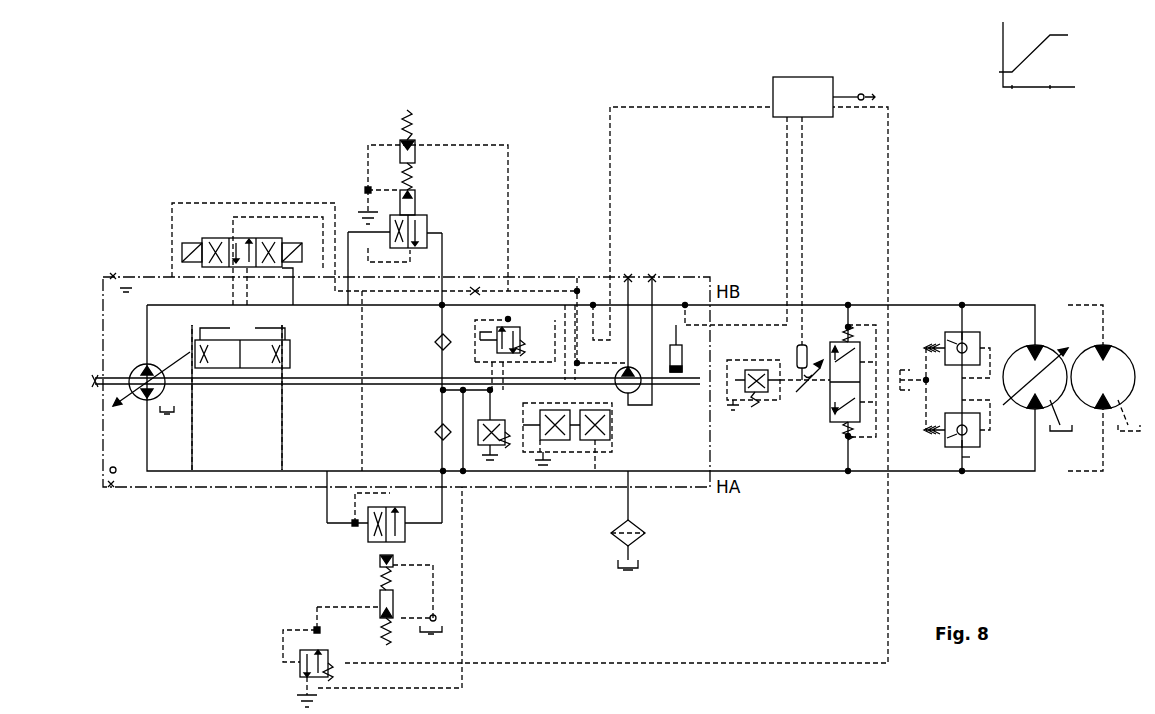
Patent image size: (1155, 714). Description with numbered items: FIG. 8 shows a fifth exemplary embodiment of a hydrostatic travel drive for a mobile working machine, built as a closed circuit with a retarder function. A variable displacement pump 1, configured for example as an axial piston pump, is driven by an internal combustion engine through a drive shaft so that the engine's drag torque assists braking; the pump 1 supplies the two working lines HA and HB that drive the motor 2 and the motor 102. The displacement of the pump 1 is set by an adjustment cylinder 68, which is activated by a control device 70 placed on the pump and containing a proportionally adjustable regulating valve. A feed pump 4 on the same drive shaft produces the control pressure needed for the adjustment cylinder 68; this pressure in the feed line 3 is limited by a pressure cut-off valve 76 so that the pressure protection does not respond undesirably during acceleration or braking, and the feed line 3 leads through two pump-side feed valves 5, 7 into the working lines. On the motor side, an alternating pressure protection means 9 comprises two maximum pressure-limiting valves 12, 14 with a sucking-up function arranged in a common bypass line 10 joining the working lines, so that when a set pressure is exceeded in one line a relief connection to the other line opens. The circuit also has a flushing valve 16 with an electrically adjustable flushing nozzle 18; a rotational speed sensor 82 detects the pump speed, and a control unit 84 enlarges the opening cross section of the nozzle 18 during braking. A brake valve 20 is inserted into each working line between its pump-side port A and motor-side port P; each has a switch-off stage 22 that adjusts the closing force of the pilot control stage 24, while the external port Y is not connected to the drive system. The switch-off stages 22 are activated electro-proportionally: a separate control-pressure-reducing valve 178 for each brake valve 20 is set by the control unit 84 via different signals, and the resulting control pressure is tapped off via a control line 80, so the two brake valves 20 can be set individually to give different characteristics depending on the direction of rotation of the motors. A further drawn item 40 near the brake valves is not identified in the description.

The variable displacement pump 1 is at (140, 364).
The motor 2 is at (1017, 353).
The feed line 3 is at (535, 320).
The feed pump 4 is at (642, 391).
The feed valve 5 is at (434, 352).
The feed valve 7 is at (434, 436).
The alternating pressure protection means 9 is at (912, 403).
The bypass line 10 is at (970, 457).
The maximum pressure-limiting valve 12 is at (962, 344).
The maximum pressure-limiting valve 14 is at (960, 447).
The flushing valve 16 is at (823, 423).
The flushing nozzle 18 is at (803, 395).
The brake valve 20 is at (430, 228).
The switch-off stage 22 is at (415, 154).
The pilot control stage 24 is at (415, 204).
The control valve arrangement 40 is at (387, 216).
The adjustment cylinder 68 is at (243, 372).
The control device 70 is at (241, 203).
The pressure cut-off valve 76 is at (530, 455).
The control line 80 is at (462, 145).
The rotational speed sensor 82 is at (684, 366).
The control unit 84 is at (808, 90).
The motor 102 is at (1103, 345).
The control-pressure-reducing valve 178 is at (508, 319).